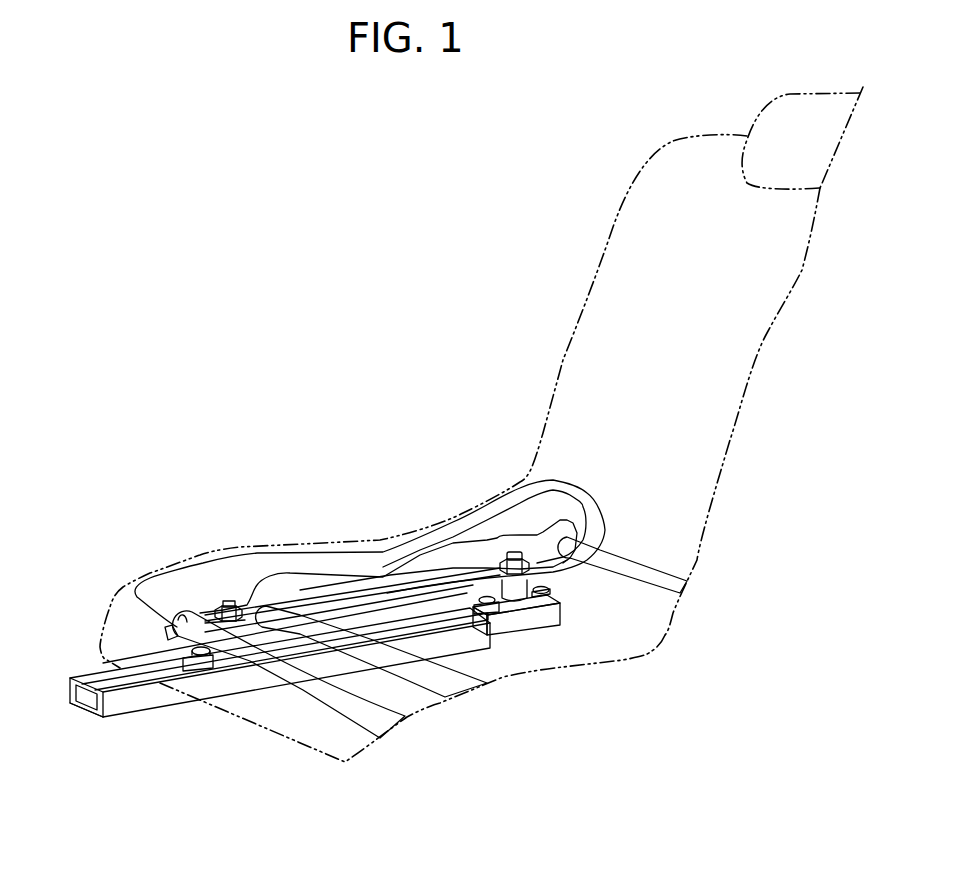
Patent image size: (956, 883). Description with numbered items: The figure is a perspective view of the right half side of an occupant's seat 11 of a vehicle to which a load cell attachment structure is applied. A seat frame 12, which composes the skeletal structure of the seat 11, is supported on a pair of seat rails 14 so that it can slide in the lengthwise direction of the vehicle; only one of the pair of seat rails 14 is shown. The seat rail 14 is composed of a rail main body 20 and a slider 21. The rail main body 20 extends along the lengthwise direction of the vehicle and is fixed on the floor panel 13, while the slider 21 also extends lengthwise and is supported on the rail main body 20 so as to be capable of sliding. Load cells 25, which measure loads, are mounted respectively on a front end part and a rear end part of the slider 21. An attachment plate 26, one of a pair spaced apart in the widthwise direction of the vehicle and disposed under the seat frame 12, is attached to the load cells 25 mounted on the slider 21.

The seat 11 is at (396, 406).
The seat frame 12 is at (354, 558).
The floor panel 13 is at (217, 748).
The seat rail 14 is at (74, 716).
The rail main body 20 is at (71, 680).
The slider 21 is at (518, 627).
The load cell 25 is at (257, 619).
The attachment plate 26 is at (338, 593).